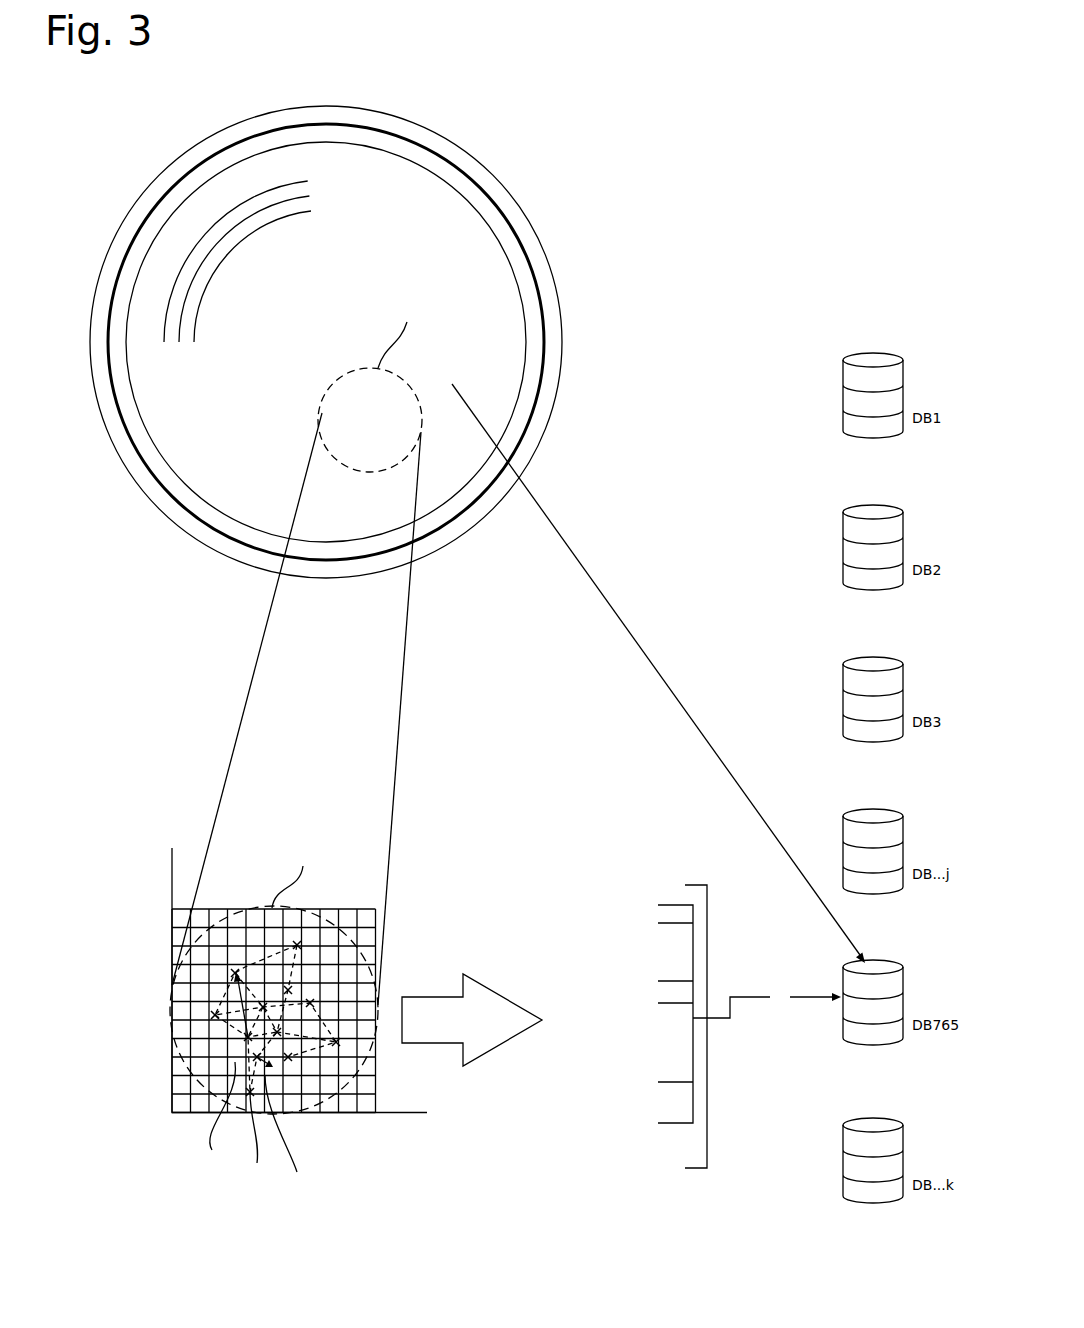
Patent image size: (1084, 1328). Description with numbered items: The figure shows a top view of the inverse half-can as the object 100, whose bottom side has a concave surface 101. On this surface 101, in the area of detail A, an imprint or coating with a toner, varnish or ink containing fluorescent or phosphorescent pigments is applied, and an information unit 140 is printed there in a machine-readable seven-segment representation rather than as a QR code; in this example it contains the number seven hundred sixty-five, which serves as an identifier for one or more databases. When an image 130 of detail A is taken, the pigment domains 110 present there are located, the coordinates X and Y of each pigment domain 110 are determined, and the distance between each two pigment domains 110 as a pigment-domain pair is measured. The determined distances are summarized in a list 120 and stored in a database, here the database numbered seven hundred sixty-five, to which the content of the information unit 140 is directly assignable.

The object 100 is at (460, 147).
The surface 101 is at (457, 288).
The information unit 140 is at (452, 382).
The image 130 is at (110, 839).
The pigment domain 110 is at (298, 946).
The list 120 is at (708, 1148).